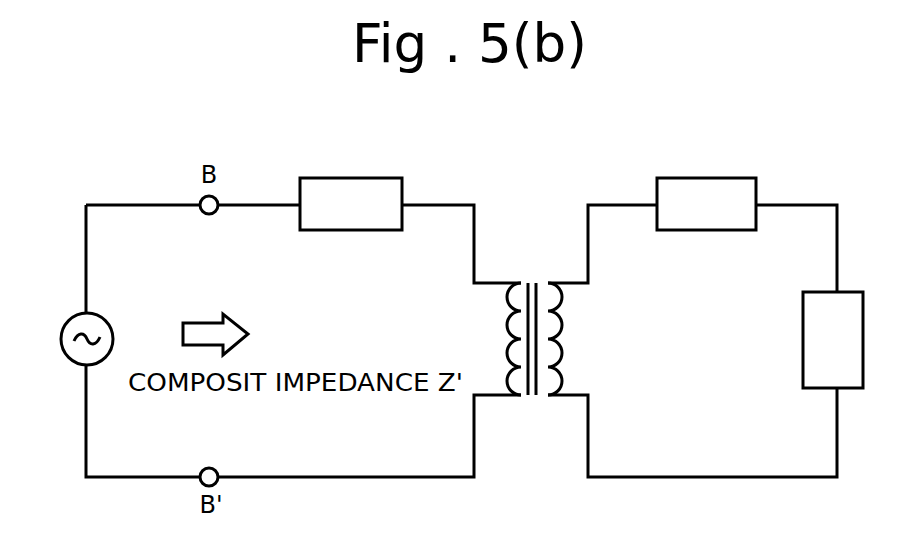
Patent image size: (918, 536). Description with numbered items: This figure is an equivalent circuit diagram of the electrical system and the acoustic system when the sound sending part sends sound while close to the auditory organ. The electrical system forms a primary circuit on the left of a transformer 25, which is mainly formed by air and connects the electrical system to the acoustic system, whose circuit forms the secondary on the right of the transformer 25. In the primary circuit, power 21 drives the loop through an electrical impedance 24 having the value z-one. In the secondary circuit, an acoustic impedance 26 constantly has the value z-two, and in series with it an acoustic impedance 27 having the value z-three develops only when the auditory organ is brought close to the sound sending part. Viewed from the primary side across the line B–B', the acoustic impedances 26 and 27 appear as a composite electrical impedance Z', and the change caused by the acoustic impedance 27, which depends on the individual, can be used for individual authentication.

The power 21 is at (61, 343).
The electrical impedance 24 is at (300, 185).
The transformer 25 is at (532, 397).
The acoustic impedance 26 is at (657, 183).
The acoustic impedance 27 is at (803, 358).